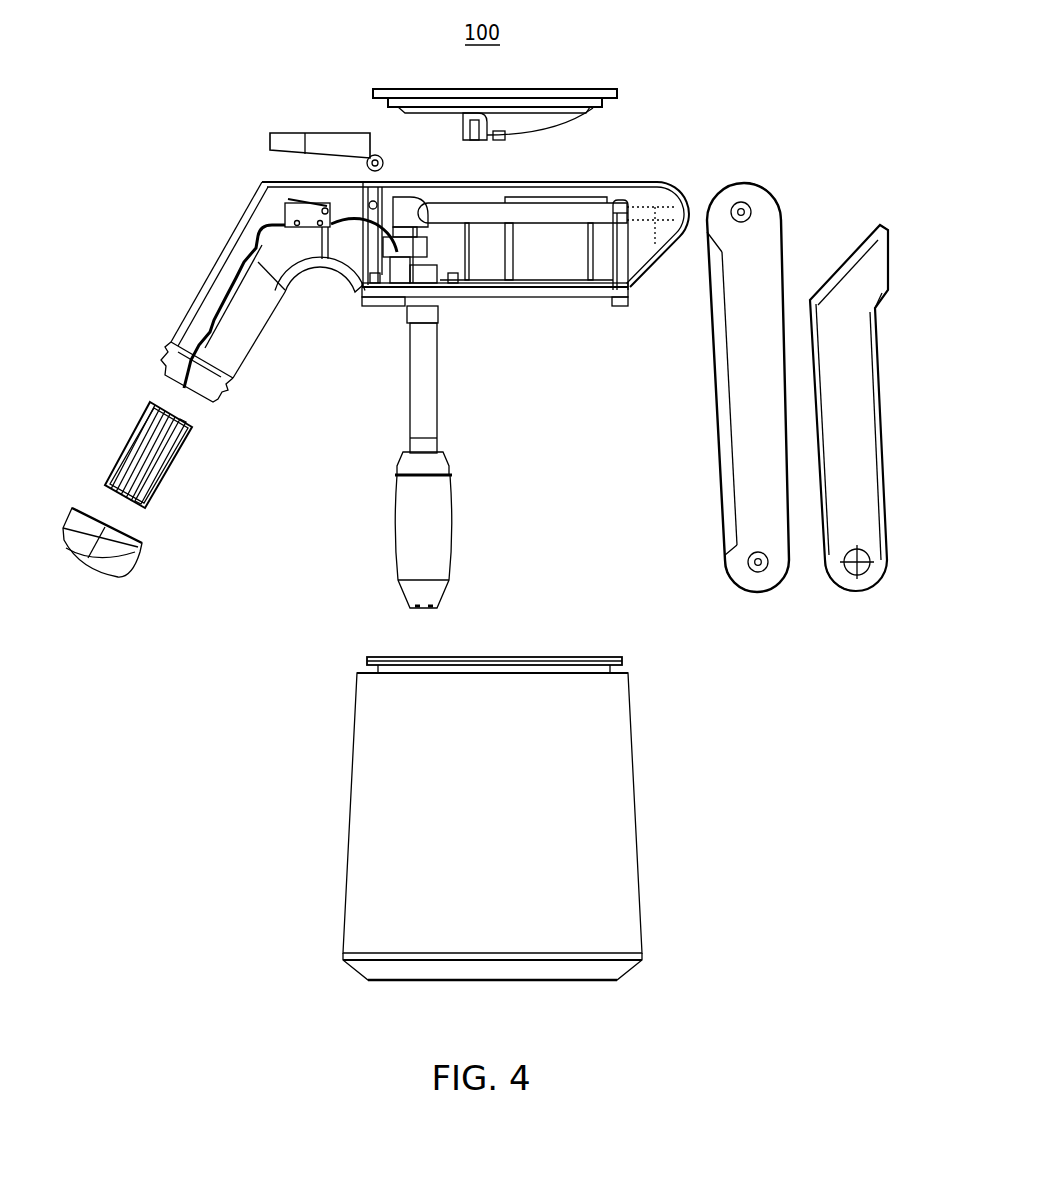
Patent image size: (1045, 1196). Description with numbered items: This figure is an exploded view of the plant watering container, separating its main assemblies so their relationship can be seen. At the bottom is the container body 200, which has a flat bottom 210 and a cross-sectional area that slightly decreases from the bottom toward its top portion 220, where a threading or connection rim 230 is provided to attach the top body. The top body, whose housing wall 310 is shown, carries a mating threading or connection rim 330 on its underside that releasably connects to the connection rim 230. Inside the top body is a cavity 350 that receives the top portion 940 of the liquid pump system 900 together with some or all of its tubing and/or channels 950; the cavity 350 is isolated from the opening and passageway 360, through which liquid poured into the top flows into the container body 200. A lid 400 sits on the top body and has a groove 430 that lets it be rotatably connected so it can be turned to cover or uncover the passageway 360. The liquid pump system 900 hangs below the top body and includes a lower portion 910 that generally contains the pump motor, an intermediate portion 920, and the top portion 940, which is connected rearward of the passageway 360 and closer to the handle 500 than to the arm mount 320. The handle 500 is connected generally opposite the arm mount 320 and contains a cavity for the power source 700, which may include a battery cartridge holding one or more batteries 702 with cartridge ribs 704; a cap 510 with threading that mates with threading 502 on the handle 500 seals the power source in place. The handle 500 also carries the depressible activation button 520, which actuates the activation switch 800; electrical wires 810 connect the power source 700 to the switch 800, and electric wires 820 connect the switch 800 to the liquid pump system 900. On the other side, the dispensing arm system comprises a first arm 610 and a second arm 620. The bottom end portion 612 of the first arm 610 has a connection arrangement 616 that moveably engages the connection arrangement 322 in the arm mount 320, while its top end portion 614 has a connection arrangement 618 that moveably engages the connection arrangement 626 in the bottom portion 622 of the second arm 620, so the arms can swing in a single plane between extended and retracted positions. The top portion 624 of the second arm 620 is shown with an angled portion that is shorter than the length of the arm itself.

The container body 200 is at (376, 851).
The flat bottom 210 is at (383, 970).
The top portion 220 is at (628, 676).
The threading or connection rim 230 is at (373, 657).
The housing 310 is at (552, 182).
The arm mount 320 is at (643, 237).
The connection arrangement 322 is at (655, 213).
The threading or connection rim 330 is at (488, 297).
The cavity 350 is at (438, 233).
The opening and passageway 360 is at (578, 243).
The lid 400 is at (413, 92).
The groove 430 is at (590, 104).
The handle 500 is at (205, 290).
The threading 502 is at (165, 355).
The cap 510 is at (103, 550).
The activation button 520 is at (325, 142).
The first arm 610 is at (748, 402).
The bottom end portion 612 is at (758, 200).
The top end portion 614 is at (740, 570).
The connection arrangement 616 is at (742, 208).
The connection arrangement 618 is at (757, 566).
The second arm 620 is at (845, 405).
The bottom portion 622 is at (850, 588).
The top portion 624 is at (843, 290).
The connection arrangement 626 is at (858, 564).
The power source 700 is at (136, 438).
The batteries 702 is at (147, 473).
The tube ribs 704 is at (133, 467).
The activation switch 800 is at (295, 218).
The electrical wires 810 is at (245, 263).
The electric wires 820 is at (346, 222).
The liquid pump system 900 is at (480, 435).
The lower portion 910 is at (430, 533).
The intermediate portion 920 is at (425, 365).
The top portion 940 is at (398, 270).
The tubing and/or channels 950 is at (517, 213).